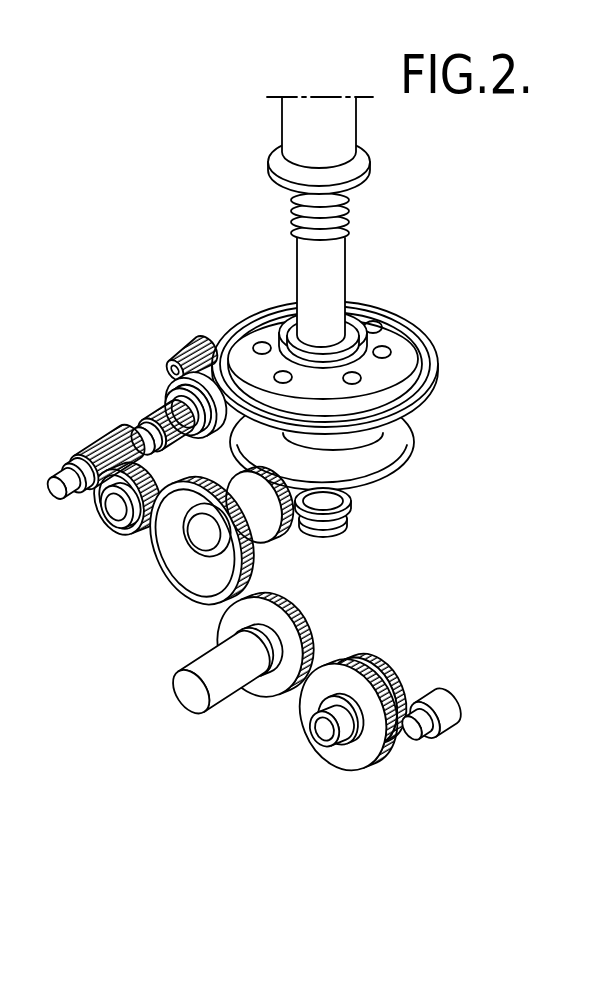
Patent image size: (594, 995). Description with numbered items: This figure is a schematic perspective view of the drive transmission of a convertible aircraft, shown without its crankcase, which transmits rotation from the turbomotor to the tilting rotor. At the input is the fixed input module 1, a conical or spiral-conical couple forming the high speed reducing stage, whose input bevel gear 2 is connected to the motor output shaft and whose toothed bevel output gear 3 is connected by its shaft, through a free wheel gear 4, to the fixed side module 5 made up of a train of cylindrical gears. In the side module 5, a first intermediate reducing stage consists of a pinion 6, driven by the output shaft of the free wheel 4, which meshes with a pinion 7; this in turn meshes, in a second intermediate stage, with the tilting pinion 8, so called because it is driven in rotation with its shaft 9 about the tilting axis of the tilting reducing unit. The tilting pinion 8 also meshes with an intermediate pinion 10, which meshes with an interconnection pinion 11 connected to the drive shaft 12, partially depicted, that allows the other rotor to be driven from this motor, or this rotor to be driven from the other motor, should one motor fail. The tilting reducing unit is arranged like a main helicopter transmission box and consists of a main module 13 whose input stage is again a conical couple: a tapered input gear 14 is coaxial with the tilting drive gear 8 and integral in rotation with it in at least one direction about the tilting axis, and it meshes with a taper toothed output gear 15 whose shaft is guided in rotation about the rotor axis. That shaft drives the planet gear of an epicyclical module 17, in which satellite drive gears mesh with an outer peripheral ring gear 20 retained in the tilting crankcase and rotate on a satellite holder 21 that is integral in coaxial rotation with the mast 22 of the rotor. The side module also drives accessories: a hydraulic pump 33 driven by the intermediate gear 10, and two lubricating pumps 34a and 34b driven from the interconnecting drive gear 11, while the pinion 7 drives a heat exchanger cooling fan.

The fixed input module 1 is at (143, 345).
The input bevel gear 2 is at (195, 353).
The toothed bevel output gear 3 is at (185, 382).
The free wheel gear 4 is at (153, 413).
The fixed side module 5 is at (306, 640).
The pinion 6 is at (92, 445).
The pinion 7 is at (139, 512).
The tilting pinion 8 is at (257, 557).
The shaft 9 is at (263, 522).
The intermediate pinion 10 is at (293, 623).
The interconnection pinion 11 is at (363, 747).
The drive shaft 12 is at (322, 737).
The main module 13 is at (364, 465).
The tapered input gear 14 is at (323, 512).
The taper toothed output gear 15 is at (396, 442).
The epicyclical module 17 is at (413, 357).
The outer peripheral ring gear 20 is at (418, 388).
The satellite holder 21 is at (382, 345).
The mast 22 is at (326, 258).
The hydraulic pump 33 is at (217, 693).
The lubricating pump 34a is at (435, 707).
The lubricating pump 34b is at (373, 662).